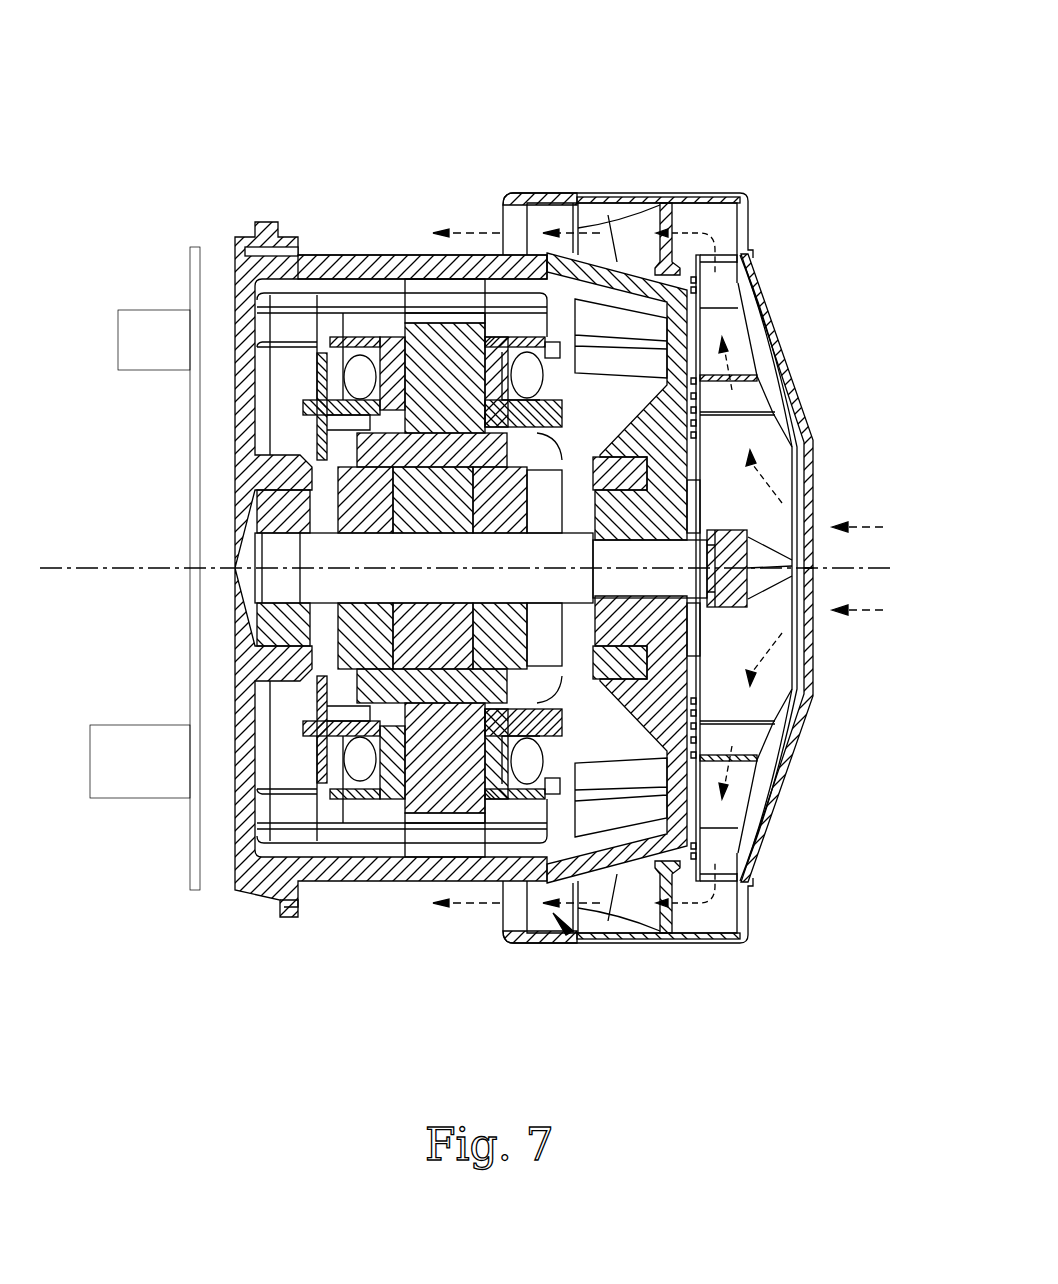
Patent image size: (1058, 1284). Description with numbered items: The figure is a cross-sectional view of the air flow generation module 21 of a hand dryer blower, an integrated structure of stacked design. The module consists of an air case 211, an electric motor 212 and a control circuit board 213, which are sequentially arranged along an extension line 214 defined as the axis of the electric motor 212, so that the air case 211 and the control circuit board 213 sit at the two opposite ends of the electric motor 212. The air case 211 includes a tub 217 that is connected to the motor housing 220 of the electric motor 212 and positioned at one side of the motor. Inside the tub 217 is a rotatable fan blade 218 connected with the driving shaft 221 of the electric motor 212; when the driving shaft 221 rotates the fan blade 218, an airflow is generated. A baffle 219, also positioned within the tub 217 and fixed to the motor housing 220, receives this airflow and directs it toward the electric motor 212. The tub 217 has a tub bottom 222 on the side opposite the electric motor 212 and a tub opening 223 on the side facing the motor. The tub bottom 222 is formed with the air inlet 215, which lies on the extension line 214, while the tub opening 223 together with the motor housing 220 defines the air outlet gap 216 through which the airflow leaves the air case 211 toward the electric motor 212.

The air flow generation module 21 is at (852, 23).
The air case 211 is at (616, 185).
The electric motor 212 is at (338, 250).
The control circuit board 213 is at (194, 245).
The extension line 214 is at (876, 545).
The air inlet 215 is at (820, 673).
The air outlet gap 216 is at (574, 946).
The tub 217 is at (680, 196).
The rotatable fan blade 218 is at (705, 507).
The baffle 219 is at (675, 330).
The motor housing 220 is at (397, 254).
The driving shaft 221 is at (735, 577).
The tub bottom 222 is at (787, 353).
The tub opening 223 is at (528, 946).